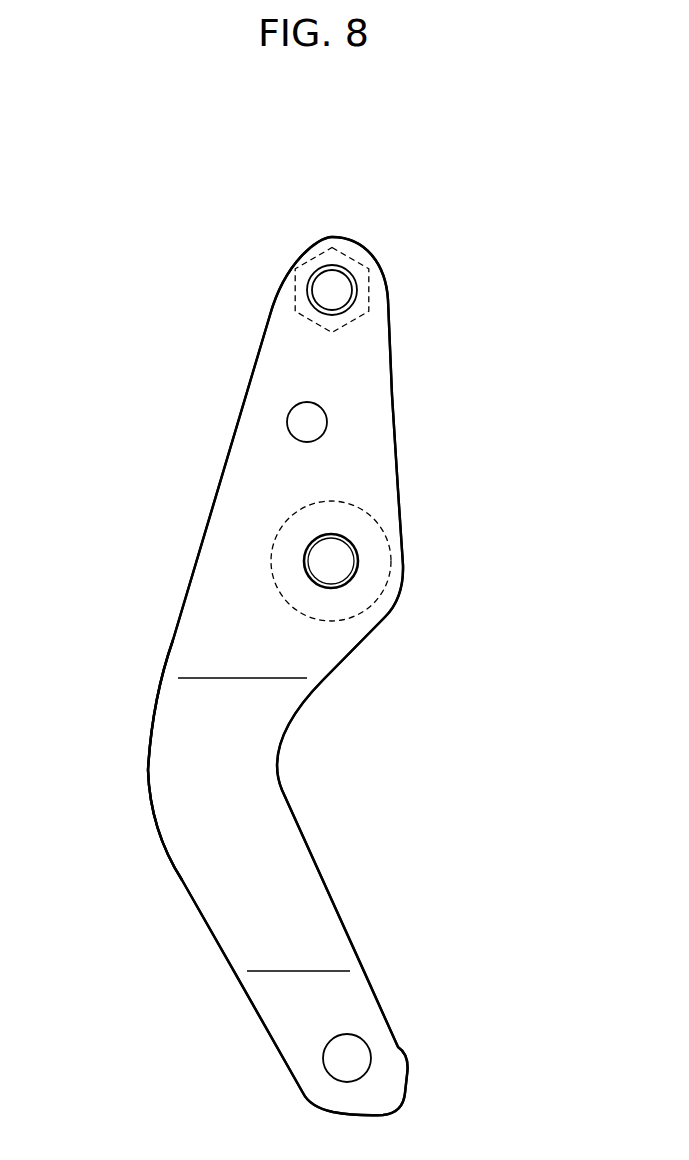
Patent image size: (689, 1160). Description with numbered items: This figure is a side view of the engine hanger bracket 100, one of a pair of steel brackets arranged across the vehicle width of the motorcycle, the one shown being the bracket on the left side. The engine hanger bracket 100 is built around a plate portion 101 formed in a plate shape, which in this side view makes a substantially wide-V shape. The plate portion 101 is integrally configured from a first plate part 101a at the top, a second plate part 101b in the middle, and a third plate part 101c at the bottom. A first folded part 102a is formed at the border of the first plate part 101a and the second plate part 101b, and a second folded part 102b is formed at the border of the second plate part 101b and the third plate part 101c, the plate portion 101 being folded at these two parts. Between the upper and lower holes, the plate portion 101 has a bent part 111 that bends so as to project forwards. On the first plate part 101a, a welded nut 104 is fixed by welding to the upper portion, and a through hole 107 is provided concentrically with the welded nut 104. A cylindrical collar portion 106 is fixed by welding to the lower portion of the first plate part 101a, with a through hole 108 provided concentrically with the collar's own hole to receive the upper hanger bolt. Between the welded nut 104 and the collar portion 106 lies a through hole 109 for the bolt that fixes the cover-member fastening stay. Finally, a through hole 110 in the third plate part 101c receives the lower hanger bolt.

The engine hanger bracket 100 is at (224, 213).
The plate portion 101 is at (250, 440).
The first plate part 101a is at (233, 480).
The second plate part 101b is at (193, 773).
The third plate part 101c is at (290, 1017).
The first folded part 102a is at (172, 678).
The second folded part 102b is at (244, 971).
The welded nut 104 is at (340, 257).
The through hole 107 is at (335, 292).
The through hole 109 is at (308, 422).
The collar portion 106 is at (370, 530).
The through hole 108 is at (333, 565).
The through hole 110 is at (347, 1058).
The bent part 111 is at (165, 748).